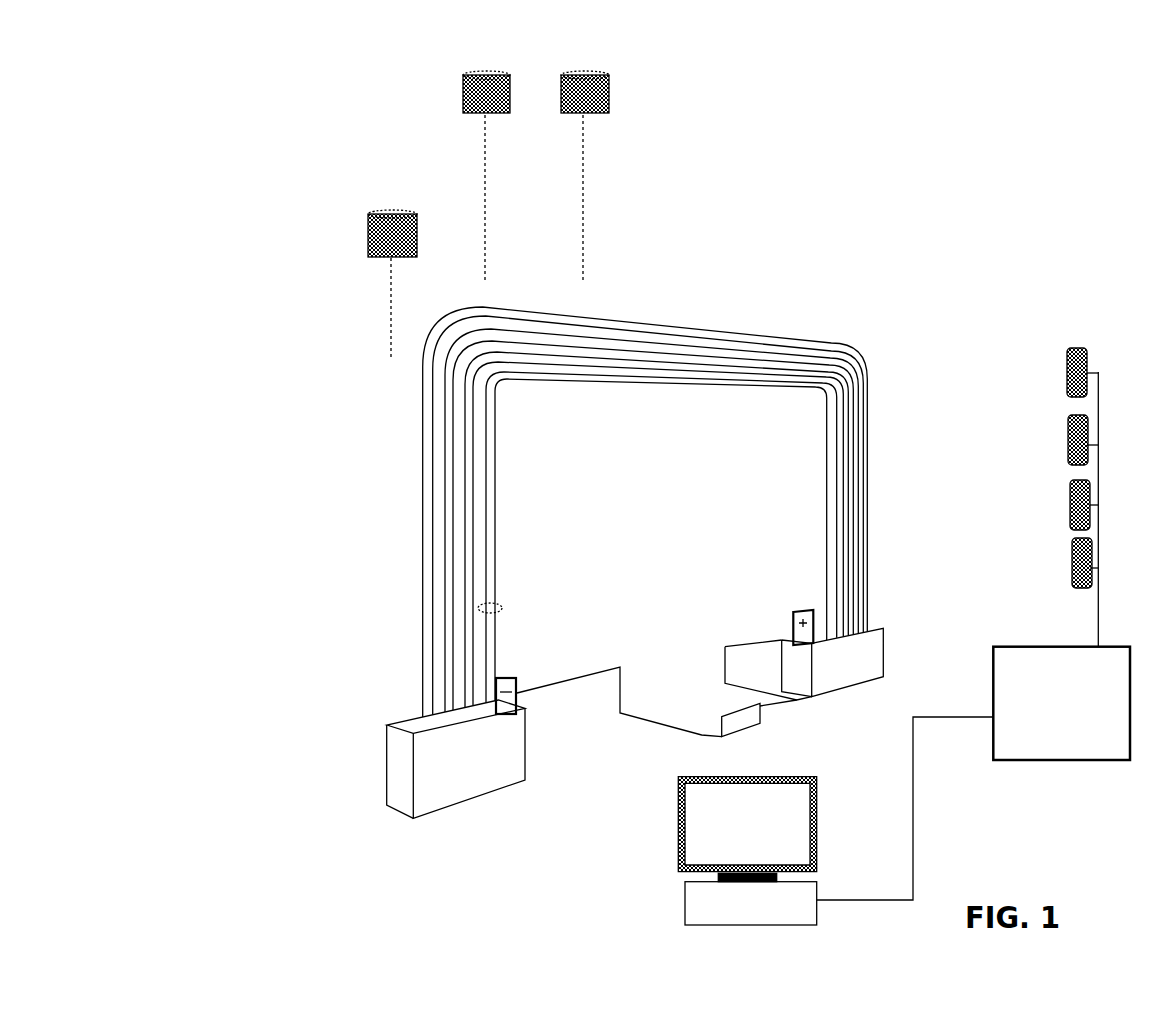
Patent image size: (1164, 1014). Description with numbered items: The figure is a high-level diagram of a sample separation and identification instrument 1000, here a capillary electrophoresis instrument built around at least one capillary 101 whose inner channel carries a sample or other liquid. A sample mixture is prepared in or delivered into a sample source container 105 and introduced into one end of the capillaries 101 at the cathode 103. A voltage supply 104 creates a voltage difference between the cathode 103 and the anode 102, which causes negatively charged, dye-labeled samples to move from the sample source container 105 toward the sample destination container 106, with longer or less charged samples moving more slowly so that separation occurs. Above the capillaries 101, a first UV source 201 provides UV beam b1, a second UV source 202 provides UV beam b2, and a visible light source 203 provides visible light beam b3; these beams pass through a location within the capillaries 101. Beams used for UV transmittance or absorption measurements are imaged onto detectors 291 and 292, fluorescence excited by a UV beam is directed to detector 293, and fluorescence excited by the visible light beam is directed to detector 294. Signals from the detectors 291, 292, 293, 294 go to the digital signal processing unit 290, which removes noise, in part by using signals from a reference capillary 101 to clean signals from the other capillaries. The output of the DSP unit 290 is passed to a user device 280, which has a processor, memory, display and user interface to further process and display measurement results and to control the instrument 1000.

The sample separation and identification instrument 1000 is at (102, 345).
The capillary 101 is at (503, 610).
The anode 102 is at (793, 624).
The cathode 103 is at (518, 698).
The voltage supply 104 is at (757, 727).
The sample source container 105 is at (487, 749).
The sample destination container 106 is at (868, 665).
The first UV source 201 is at (447, 231).
The second UV source 202 is at (618, 85).
The visible light source 203 is at (454, 105).
The user device 280 is at (658, 880).
The digital signal processing unit 290 is at (1073, 740).
The optical detector 291 is at (1062, 399).
The optical detector 292 is at (1063, 466).
The optical detector 293 is at (1066, 528).
The optical detector 294 is at (1074, 589).
The UV beam b1 is at (370, 309).
The UV beam b2 is at (603, 199).
The visible light beam b3 is at (501, 199).